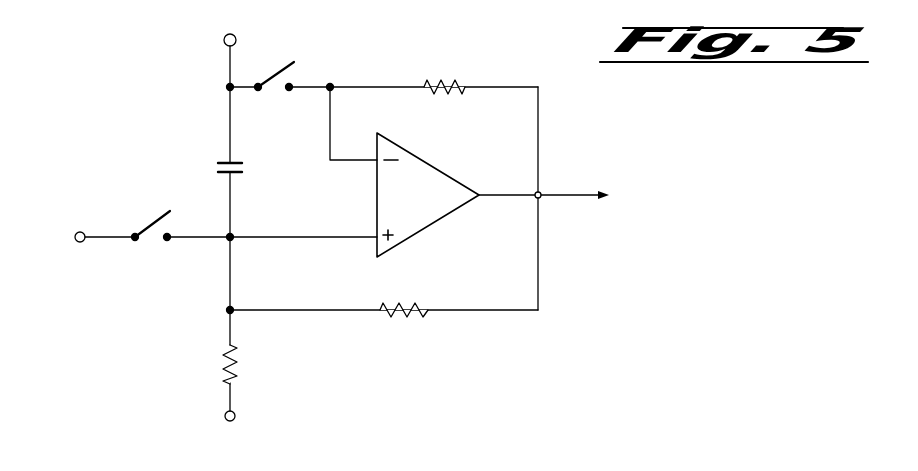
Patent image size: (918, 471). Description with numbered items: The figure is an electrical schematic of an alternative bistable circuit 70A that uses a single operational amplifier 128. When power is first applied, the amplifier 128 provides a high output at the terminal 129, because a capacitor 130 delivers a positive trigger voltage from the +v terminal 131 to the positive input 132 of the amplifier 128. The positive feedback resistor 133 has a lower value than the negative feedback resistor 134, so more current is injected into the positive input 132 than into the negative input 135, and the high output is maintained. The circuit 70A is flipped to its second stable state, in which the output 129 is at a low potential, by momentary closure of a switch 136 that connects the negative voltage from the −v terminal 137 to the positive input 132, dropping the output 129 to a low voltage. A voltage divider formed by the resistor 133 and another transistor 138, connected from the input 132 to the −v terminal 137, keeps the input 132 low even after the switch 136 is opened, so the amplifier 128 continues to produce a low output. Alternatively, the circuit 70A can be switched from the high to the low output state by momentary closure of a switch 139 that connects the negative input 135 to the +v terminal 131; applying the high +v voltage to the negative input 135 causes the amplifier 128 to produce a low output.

The bistable circuit 70A is at (112, 174).
The amplifier 128 is at (428, 214).
The output terminal 129 is at (540, 193).
The capacitor 130 is at (219, 168).
The +v terminal 131 is at (223, 41).
The positive input 132 is at (272, 239).
The positive feedback resistor 133 is at (395, 316).
The negative feedback resistor 134 is at (446, 80).
The negative input 135 is at (347, 161).
The switch 136 is at (152, 232).
The −v terminal 137 is at (80, 232).
The transistor 138 is at (228, 368).
The switch 139 is at (282, 66).